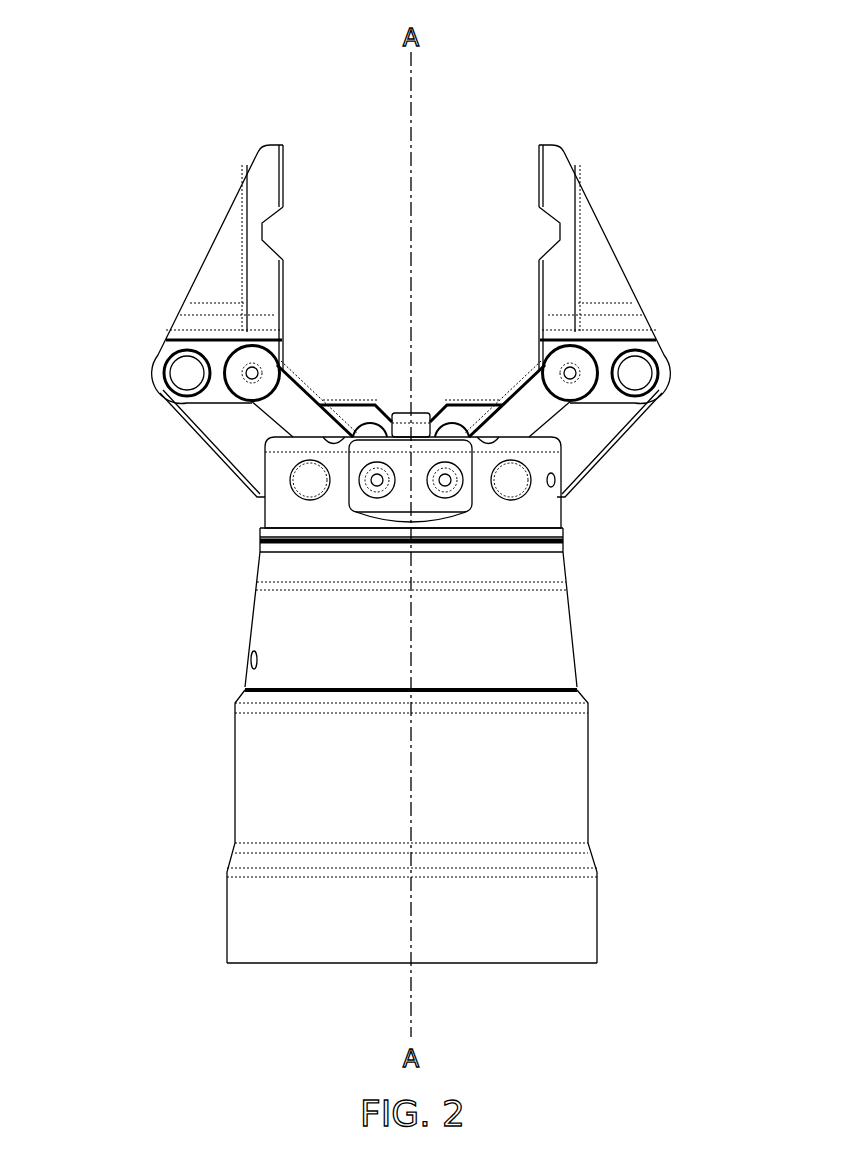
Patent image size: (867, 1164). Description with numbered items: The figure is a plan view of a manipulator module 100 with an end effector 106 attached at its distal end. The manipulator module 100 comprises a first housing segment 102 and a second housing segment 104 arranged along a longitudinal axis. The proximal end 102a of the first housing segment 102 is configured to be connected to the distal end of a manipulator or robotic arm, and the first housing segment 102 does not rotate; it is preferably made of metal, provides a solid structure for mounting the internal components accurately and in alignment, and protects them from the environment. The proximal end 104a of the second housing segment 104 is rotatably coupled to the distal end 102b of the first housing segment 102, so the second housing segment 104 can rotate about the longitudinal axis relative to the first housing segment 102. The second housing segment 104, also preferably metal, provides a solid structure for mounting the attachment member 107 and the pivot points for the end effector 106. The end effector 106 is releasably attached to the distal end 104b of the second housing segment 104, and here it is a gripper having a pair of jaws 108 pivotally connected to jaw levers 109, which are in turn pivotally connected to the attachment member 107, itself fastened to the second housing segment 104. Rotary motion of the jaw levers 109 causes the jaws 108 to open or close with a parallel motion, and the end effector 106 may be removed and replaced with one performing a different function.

The manipulator module 100 is at (645, 613).
The first housing segment 102 is at (150, 696).
The proximal end of the first housing segment 102a is at (535, 963).
The distal end of the first housing segment 102b is at (521, 691).
The second housing segment 104 is at (150, 534).
The proximal end of the second housing segment 104a is at (528, 688).
The distal end of the second housing segment 104b is at (524, 540).
The end effector 106 is at (150, 141).
The attachment member 107 is at (567, 511).
The jaws 108 is at (263, 185).
The jaw levers 109 is at (183, 430).